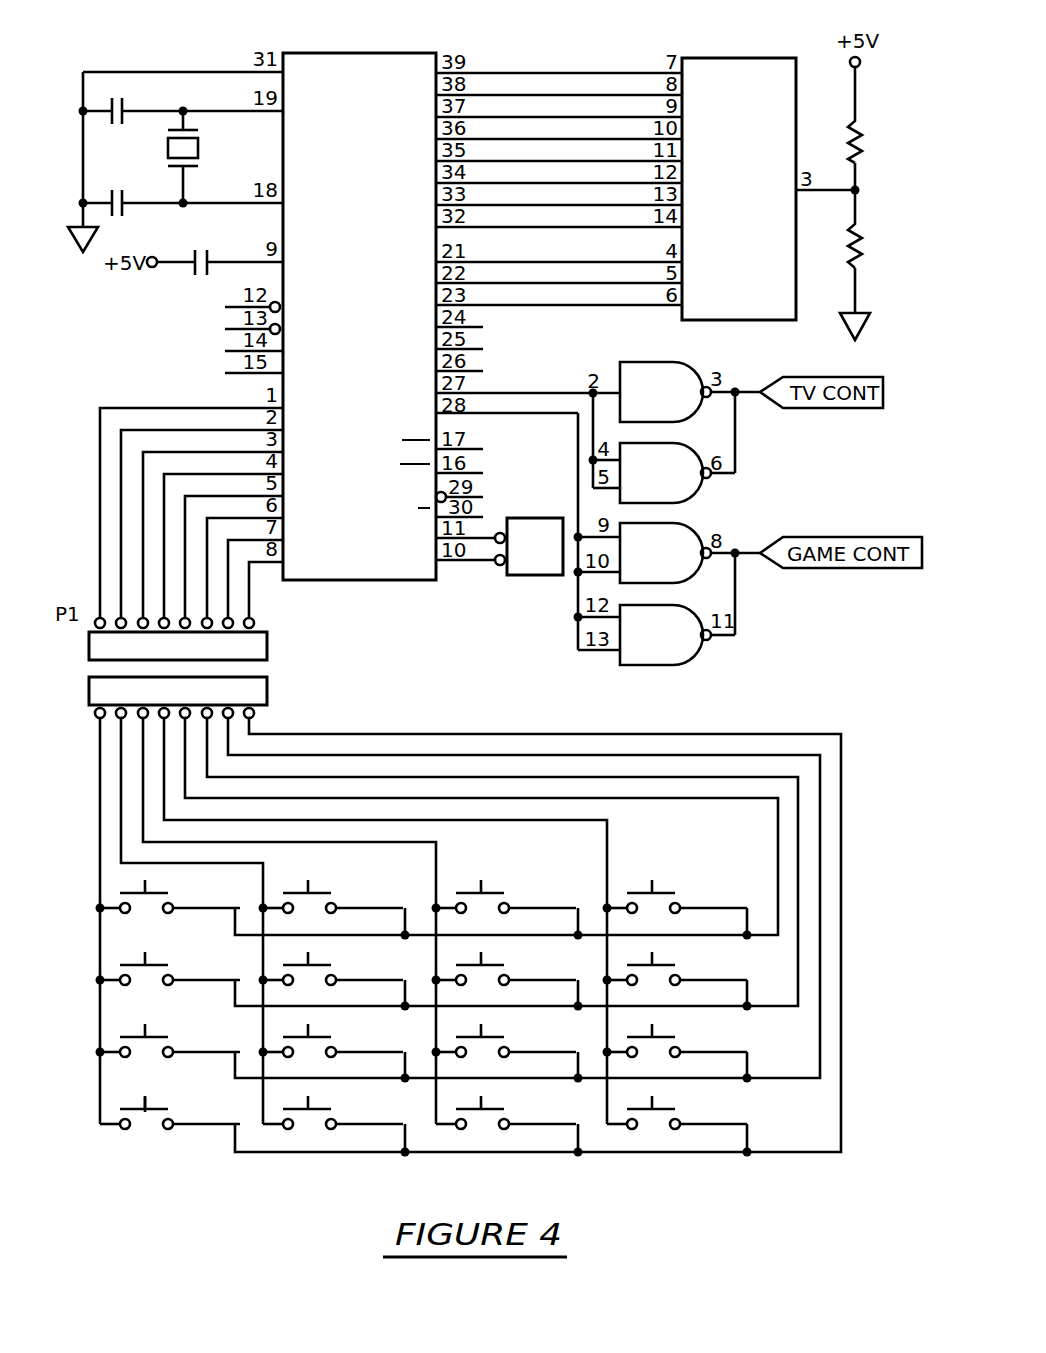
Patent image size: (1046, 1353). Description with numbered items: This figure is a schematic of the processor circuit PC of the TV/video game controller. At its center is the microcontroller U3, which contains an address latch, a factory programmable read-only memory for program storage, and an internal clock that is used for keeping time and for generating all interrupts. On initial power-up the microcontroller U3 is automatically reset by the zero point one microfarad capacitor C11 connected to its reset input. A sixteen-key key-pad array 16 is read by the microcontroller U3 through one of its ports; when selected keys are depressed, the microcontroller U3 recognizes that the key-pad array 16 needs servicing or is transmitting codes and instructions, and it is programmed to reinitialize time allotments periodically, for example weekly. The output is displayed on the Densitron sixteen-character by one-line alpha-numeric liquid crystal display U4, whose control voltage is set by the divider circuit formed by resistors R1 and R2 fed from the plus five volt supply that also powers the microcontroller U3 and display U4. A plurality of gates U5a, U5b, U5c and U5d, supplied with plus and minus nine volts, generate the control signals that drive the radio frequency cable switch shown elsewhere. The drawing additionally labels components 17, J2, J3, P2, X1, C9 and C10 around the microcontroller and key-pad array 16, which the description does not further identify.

The key-pad array 16 is at (504, 872).
The on/off switch 17 is at (144, 1112).
The microcontroller U3 is at (382, 582).
The liquid crystal display U4 is at (746, 188).
The gate U5a is at (665, 392).
The gate U5b is at (665, 473).
The gate U5c is at (665, 553).
The gate U5d is at (665, 635).
The connector J2 is at (190, 639).
The test connector J3 is at (535, 547).
The connector P2 is at (193, 697).
The crystal 11.0592 MHz X1 is at (219, 158).
The capacitor 33pF C9 is at (119, 111).
The capacitor 33pF C10 is at (127, 202).
The capacitor C11 is at (201, 263).
The divider circuit resistor R1 is at (871, 140).
The divider circuit resistor R2 is at (877, 244).
The processor circuit PC is at (465, 655).